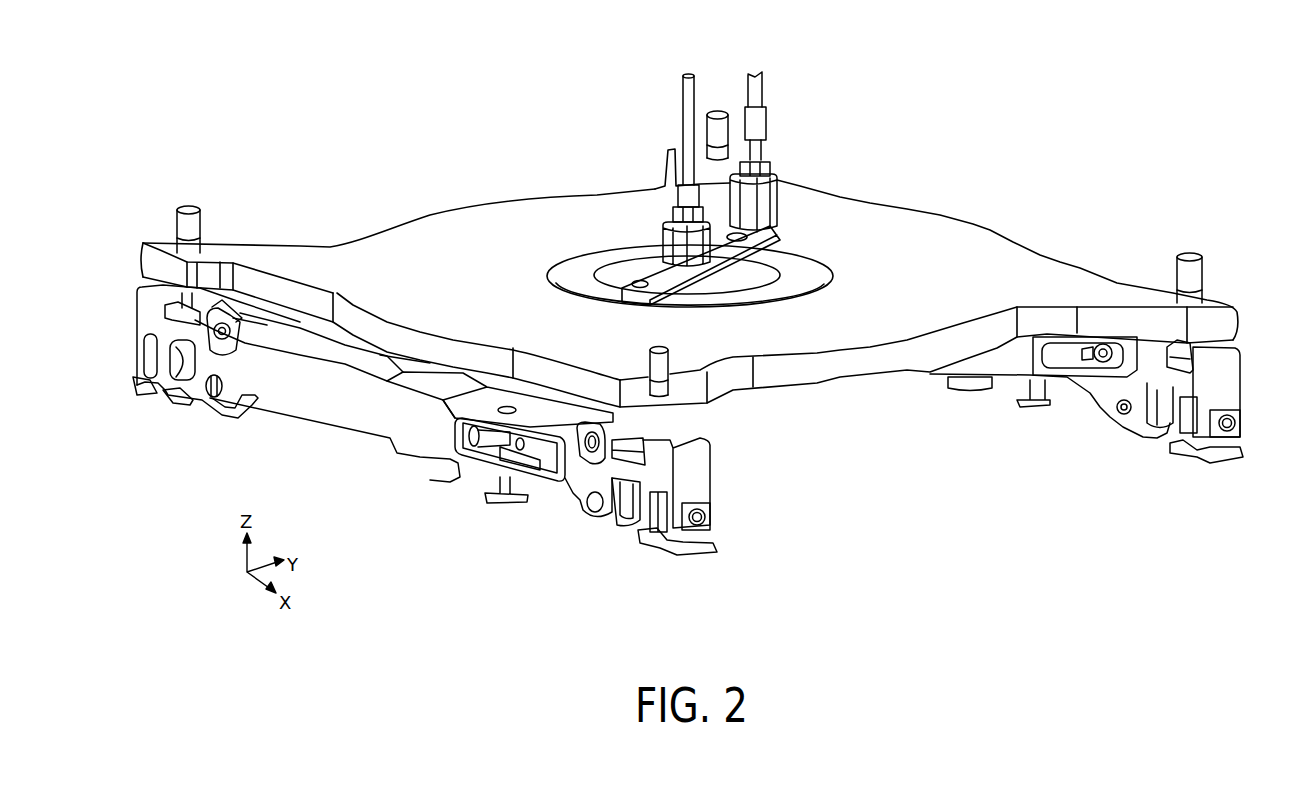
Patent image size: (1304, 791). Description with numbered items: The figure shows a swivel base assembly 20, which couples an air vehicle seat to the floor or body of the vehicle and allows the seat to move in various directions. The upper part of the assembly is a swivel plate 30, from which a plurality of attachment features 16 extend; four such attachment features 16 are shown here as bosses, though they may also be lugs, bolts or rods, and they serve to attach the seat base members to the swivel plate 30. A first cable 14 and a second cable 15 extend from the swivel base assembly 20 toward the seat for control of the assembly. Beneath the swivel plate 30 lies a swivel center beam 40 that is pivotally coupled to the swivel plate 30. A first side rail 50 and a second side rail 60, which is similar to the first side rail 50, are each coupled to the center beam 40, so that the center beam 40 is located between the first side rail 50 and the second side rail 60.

The swivel base assembly 20 is at (378, 115).
The first cable 14 is at (680, 95).
The second cable 15 is at (760, 84).
The attachment features 16 is at (204, 222).
The swivel plate 30 is at (913, 219).
The swivel center beam 40 is at (770, 403).
The first side rail 50 is at (346, 412).
The second side rail 60 is at (1233, 398).